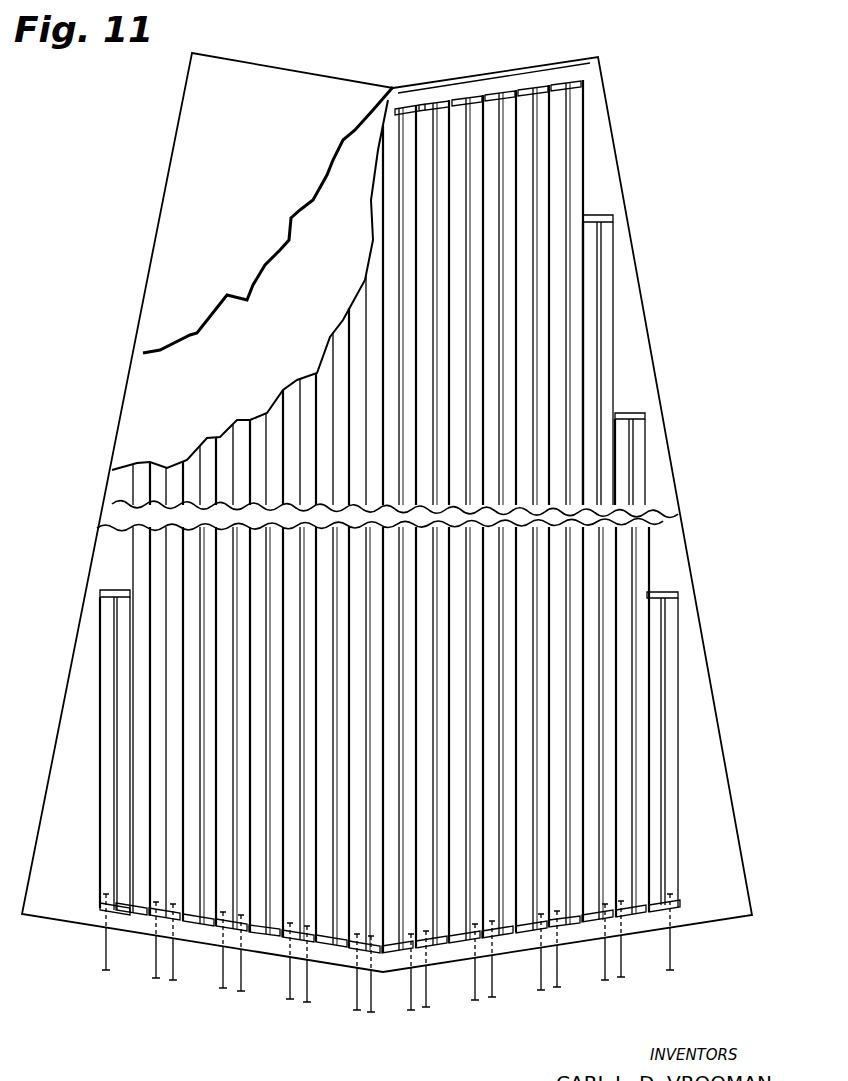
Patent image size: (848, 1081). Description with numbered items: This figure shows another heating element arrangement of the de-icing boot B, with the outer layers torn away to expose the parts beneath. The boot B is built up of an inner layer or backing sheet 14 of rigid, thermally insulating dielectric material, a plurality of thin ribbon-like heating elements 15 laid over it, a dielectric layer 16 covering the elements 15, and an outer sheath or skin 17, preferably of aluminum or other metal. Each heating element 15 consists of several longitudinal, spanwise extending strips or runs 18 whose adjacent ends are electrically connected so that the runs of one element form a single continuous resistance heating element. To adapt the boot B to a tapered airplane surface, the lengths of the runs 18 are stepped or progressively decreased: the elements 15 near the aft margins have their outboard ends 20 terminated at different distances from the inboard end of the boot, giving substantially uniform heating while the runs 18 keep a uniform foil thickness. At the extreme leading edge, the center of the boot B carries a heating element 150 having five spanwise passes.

The boot B is at (125, 389).
The inner layer or sheet of thermal insulating and backing material 14 is at (88, 632).
The ribbon-like heating element 15 is at (158, 554).
The dielectric layer 16 is at (157, 368).
The outer sheath or skin 17 is at (177, 270).
The run 18 is at (712, 707).
The outboard end 20 is at (591, 216).
The heating element 150 is at (383, 931).